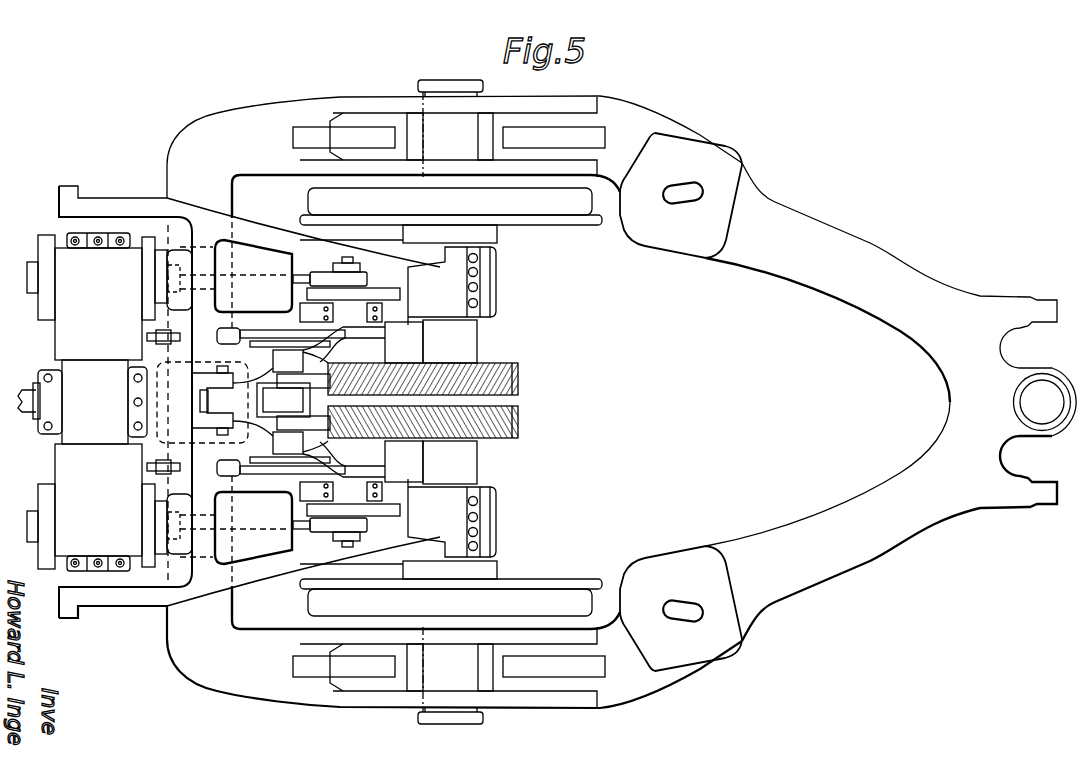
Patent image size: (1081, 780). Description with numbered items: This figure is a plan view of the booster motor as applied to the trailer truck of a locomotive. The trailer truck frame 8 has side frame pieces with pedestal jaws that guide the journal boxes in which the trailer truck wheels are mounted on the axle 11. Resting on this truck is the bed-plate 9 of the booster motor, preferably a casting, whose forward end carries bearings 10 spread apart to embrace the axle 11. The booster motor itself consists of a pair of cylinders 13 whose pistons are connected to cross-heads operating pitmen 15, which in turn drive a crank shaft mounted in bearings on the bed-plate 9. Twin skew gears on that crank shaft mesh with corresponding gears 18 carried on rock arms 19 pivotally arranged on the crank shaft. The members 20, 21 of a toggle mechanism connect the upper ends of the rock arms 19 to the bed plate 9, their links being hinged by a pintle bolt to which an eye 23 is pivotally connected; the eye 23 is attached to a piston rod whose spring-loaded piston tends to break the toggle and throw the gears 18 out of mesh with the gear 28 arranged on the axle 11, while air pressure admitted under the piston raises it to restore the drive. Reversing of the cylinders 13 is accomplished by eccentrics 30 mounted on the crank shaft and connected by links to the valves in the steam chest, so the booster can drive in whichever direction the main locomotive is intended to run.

The trailer truck frame 8 is at (782, 548).
The bed-plate 9 is at (103, 207).
The bearings 10 is at (452, 402).
The axle 11 is at (465, 343).
The cylinders 13 is at (158, 402).
The pitmen 15 is at (306, 275).
The gears 18 is at (303, 402).
The rock arms 19 is at (363, 402).
The toggle member 20 is at (280, 402).
The toggle member 21 is at (214, 400).
The eye 23 is at (283, 400).
The gear 28 is at (505, 418).
The eccentrics 30 is at (20, 380).